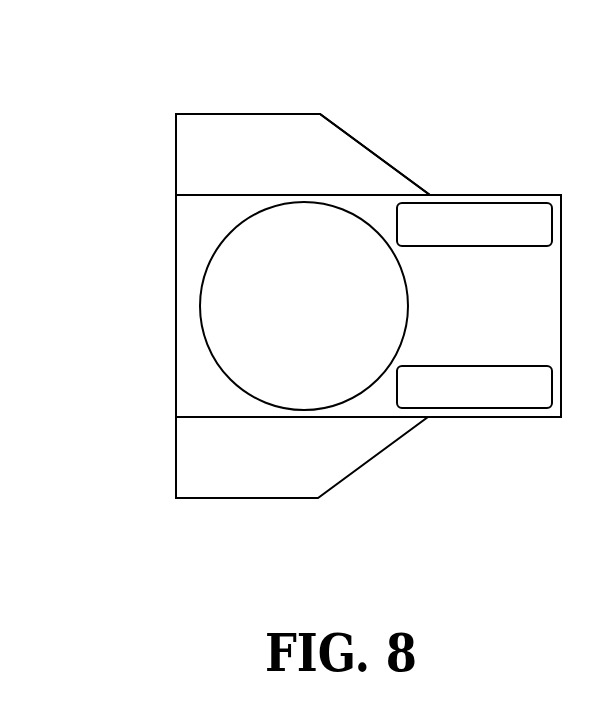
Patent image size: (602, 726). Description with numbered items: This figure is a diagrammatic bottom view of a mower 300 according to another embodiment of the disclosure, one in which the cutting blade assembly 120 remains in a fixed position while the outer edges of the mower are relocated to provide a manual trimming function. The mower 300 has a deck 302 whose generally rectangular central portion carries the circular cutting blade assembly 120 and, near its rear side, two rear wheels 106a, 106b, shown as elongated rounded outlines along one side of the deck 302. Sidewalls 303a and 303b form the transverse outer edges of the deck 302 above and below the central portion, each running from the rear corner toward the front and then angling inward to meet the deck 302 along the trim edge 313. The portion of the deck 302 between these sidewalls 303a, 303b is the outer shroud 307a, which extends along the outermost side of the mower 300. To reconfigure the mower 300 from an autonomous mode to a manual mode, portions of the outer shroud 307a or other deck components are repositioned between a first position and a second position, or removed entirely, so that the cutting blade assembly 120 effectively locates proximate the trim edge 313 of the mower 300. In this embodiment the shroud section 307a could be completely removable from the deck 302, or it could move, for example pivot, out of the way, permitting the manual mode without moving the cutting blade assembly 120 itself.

The mower 300 is at (400, 91).
The deck 302 is at (174, 388).
The trim edge 313 is at (200, 114).
The sidewall 303a is at (263, 114).
The sidewall 303b is at (263, 499).
The outer shroud 307a is at (175, 144).
The cutting blade assembly 120 is at (199, 285).
The rear wheel 106a is at (507, 220).
The rear wheel 106b is at (507, 393).